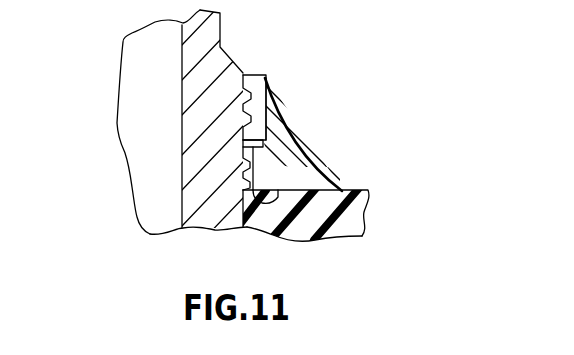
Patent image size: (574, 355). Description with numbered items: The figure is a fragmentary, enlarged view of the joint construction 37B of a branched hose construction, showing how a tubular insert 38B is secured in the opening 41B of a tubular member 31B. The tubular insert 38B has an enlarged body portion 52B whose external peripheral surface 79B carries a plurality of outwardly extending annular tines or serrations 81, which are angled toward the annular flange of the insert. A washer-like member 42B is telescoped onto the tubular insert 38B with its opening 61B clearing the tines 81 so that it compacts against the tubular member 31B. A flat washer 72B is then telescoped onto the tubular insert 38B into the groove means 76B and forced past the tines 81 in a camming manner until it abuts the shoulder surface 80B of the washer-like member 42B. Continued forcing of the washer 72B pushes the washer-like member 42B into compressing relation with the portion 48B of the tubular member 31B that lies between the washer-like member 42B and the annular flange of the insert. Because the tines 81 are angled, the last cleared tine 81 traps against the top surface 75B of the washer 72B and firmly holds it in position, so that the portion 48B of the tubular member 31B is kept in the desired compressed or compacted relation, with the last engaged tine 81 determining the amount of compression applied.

The tubular member 31B is at (350, 215).
The joint construction 37B is at (321, 145).
The tubular insert 38B is at (212, 33).
The opening 41B is at (240, 205).
The washer-like member 42B is at (307, 173).
The portion of the tubular member 48B is at (305, 218).
The enlarged body portion 52B is at (192, 119).
The opening of the washer-like member 61B is at (240, 170).
The washer 72B is at (252, 143).
The top surface of the washer 75B is at (257, 138).
The groove means 76B is at (268, 77).
The external peripheral surface 79B is at (247, 85).
The shoulder surface 80B is at (263, 132).
The tines or serrations 81 is at (271, 105).